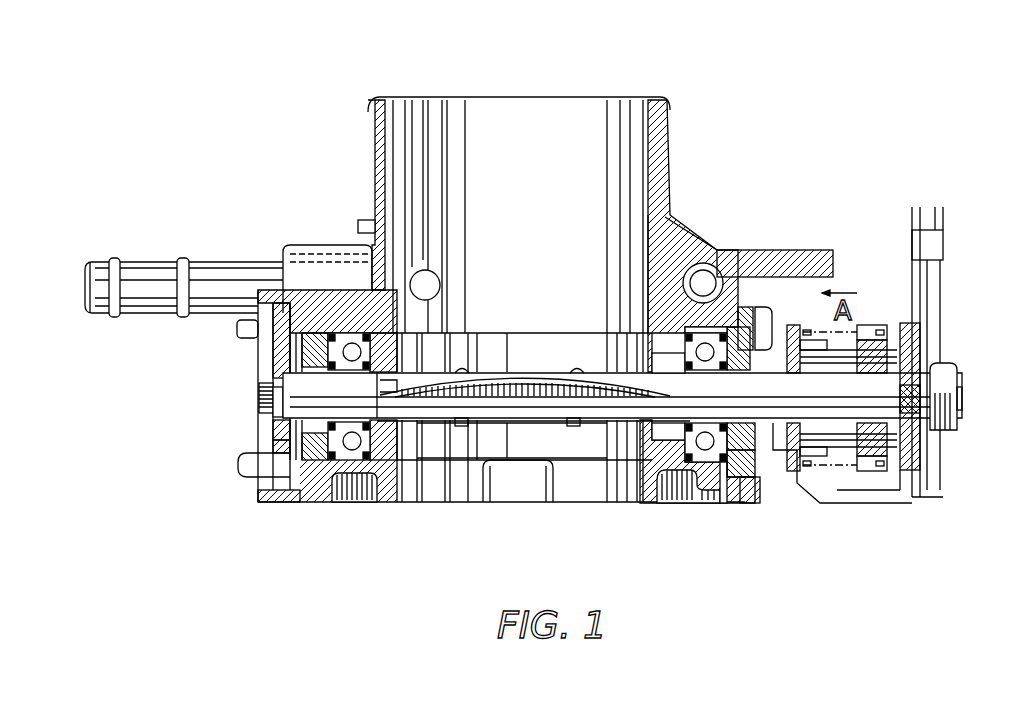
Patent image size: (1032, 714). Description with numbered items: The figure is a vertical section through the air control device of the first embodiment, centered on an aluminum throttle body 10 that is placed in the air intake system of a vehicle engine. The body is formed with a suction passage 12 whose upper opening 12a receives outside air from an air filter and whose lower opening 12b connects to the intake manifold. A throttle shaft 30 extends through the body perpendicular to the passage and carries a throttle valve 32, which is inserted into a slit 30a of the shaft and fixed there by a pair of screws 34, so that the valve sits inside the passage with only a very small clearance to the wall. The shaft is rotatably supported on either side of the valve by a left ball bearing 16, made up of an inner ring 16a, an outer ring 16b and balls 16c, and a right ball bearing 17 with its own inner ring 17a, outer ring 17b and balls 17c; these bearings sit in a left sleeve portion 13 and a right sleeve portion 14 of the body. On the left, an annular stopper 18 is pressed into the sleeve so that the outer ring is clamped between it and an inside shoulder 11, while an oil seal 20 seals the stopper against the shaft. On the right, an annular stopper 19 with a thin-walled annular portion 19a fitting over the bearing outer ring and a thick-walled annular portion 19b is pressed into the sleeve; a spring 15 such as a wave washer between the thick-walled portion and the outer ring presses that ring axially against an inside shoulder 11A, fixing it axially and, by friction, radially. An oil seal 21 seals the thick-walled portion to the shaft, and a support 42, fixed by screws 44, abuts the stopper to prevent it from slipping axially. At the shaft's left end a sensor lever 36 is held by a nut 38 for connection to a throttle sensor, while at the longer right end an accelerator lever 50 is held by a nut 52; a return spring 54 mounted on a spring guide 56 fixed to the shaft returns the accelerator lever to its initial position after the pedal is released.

The throttle body 10 is at (670, 137).
The inside shoulder 11 is at (387, 503).
The inside shoulder 11A is at (693, 490).
The suction passage 12 is at (531, 116).
The upper opening 12a is at (600, 97).
The lower opening 12b is at (588, 503).
The left sleeve portion 13 is at (362, 503).
The right sleeve portion 14 is at (717, 503).
The spring 15 is at (742, 480).
The left ball bearing 16 is at (343, 327).
The inner ring 16a is at (322, 503).
The outer ring 16b is at (352, 245).
The balls 16c is at (393, 315).
The right ball bearing 17 is at (707, 497).
The inner ring 17a is at (647, 503).
The outer ring 17b is at (650, 305).
The balls 17c is at (683, 337).
The annular stopper 18 is at (304, 248).
The annular stopper 19 is at (720, 325).
The thin-walled annular portion 19a is at (705, 333).
The thick-walled annular portion 19b is at (750, 423).
The oil seal 20 is at (272, 503).
The oil seal 21 is at (752, 433).
The throttle shaft 30 is at (455, 503).
The slit 30a is at (393, 388).
The throttle valve 32 is at (537, 373).
The screws 34 is at (498, 370).
The sensor lever 36 is at (237, 462).
The nut 38 is at (258, 397).
The support 42 is at (752, 308).
The screws 44 is at (773, 325).
The accelerator lever 50 is at (918, 330).
The nut 52 is at (945, 373).
The return spring 54 is at (878, 328).
The spring guide 56 is at (798, 333).